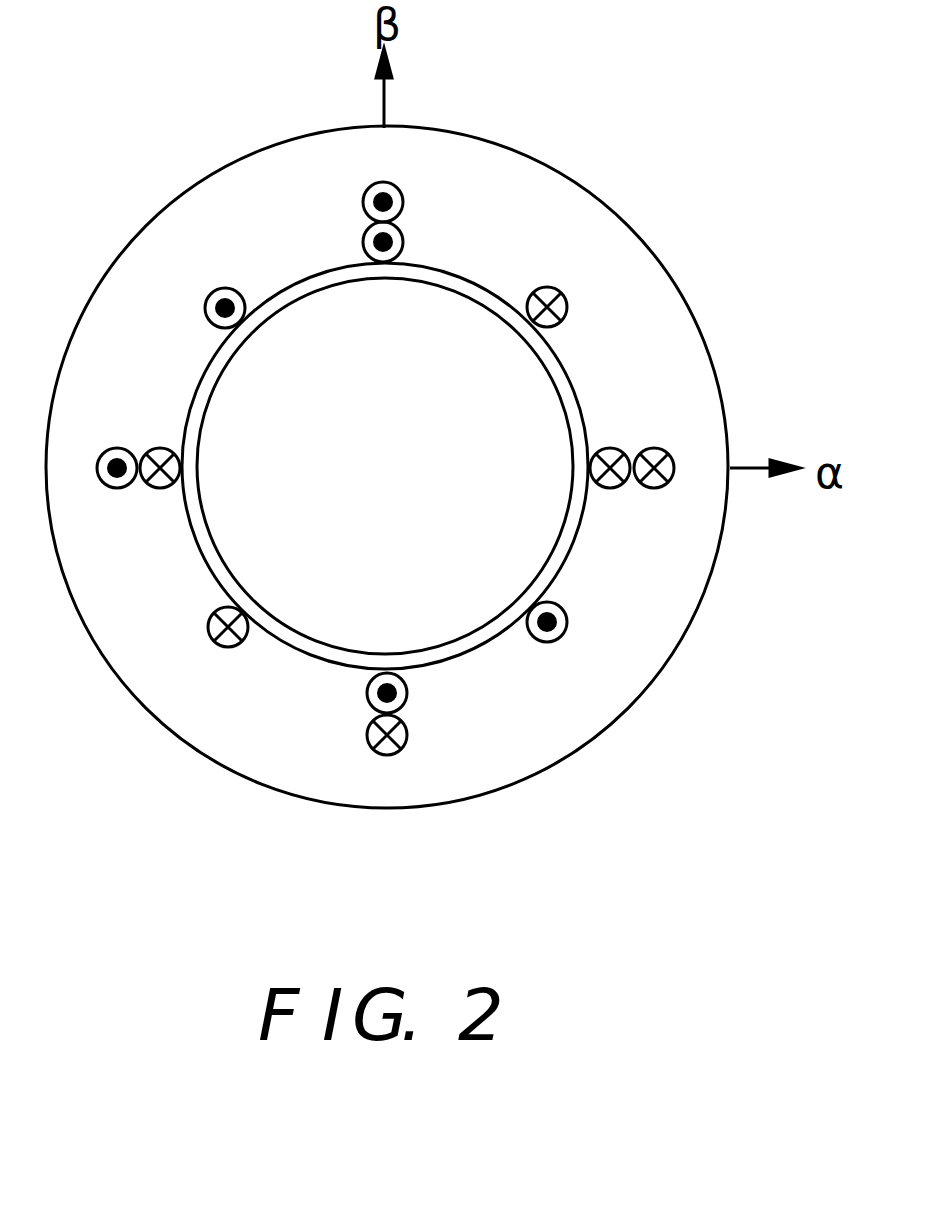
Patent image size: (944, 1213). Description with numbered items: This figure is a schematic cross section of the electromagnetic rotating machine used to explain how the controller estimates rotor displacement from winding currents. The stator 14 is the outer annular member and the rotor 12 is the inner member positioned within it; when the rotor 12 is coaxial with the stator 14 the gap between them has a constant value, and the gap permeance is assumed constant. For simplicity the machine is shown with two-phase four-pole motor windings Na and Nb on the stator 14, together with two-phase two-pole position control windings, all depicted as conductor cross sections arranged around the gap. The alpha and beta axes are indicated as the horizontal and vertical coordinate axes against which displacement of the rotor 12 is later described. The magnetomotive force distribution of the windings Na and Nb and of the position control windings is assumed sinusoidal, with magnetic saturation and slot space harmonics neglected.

The rotor 12 is at (302, 323).
The stator 14 is at (647, 246).
The two-phase four-pole motor winding Na is at (204, 308).
The two-phase four-pole motor winding Nb is at (362, 244).